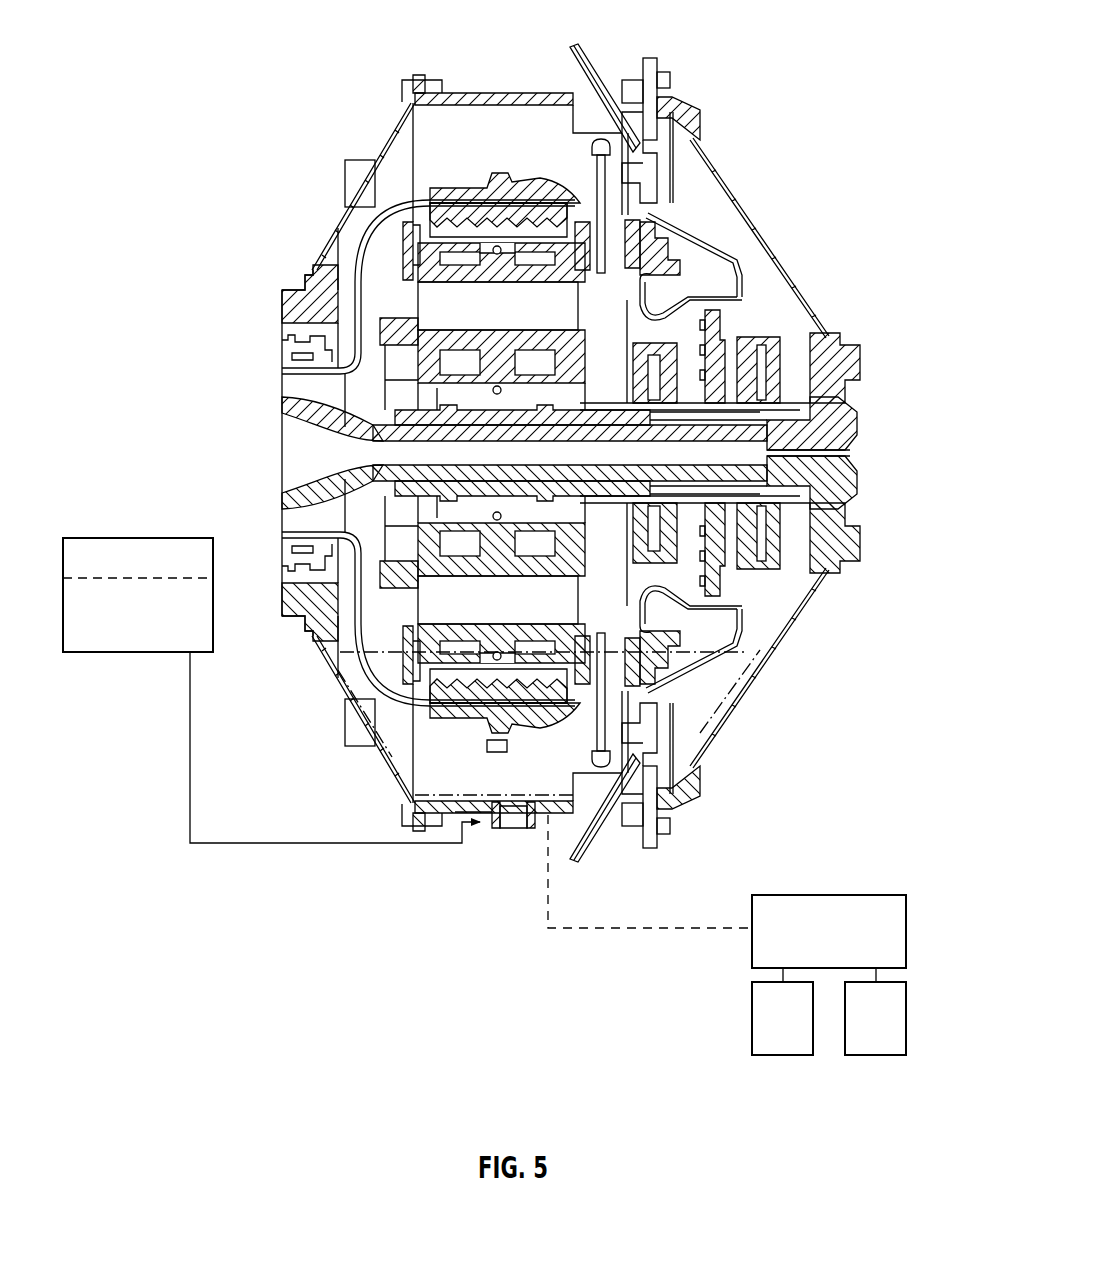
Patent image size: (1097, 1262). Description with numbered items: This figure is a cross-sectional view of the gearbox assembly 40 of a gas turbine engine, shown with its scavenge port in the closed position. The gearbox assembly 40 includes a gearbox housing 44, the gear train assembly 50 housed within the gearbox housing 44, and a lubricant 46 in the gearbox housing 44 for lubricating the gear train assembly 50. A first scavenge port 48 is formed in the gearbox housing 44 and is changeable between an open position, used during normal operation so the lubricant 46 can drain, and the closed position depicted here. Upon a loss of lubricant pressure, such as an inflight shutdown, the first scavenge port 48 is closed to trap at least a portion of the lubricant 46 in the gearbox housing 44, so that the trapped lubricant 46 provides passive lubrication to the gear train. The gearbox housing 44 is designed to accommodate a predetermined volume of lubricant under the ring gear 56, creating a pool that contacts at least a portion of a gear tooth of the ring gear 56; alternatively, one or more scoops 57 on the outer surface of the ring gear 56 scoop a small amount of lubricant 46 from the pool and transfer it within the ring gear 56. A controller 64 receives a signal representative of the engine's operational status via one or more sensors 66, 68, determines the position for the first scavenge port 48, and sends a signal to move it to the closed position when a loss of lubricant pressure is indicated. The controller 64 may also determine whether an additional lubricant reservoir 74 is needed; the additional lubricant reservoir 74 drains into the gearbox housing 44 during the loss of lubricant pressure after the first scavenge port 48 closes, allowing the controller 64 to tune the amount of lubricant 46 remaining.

The gearbox assembly 40 is at (848, 78).
The gearbox housing 44 is at (760, 230).
The lubricant 46 is at (151, 624).
The first scavenge port 48 is at (511, 835).
The gear train assembly 50 is at (430, 305).
The ring gear 56 is at (562, 690).
The scoops 57 is at (505, 745).
The controller 64 is at (876, 890).
The sensor 66 is at (798, 1031).
The sensor 68 is at (891, 1031).
The additional lubricant reservoir 74 is at (218, 572).